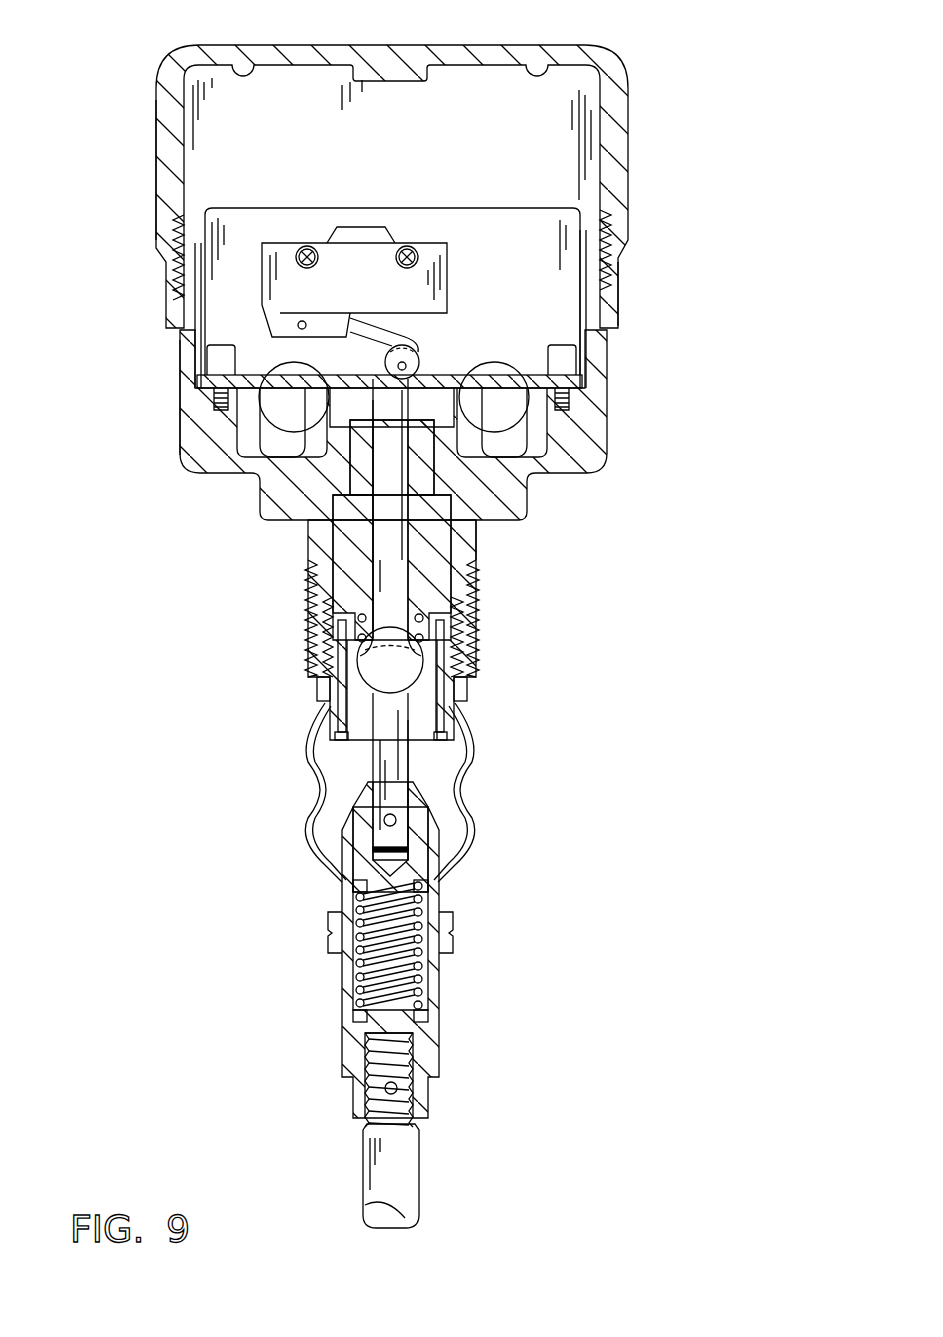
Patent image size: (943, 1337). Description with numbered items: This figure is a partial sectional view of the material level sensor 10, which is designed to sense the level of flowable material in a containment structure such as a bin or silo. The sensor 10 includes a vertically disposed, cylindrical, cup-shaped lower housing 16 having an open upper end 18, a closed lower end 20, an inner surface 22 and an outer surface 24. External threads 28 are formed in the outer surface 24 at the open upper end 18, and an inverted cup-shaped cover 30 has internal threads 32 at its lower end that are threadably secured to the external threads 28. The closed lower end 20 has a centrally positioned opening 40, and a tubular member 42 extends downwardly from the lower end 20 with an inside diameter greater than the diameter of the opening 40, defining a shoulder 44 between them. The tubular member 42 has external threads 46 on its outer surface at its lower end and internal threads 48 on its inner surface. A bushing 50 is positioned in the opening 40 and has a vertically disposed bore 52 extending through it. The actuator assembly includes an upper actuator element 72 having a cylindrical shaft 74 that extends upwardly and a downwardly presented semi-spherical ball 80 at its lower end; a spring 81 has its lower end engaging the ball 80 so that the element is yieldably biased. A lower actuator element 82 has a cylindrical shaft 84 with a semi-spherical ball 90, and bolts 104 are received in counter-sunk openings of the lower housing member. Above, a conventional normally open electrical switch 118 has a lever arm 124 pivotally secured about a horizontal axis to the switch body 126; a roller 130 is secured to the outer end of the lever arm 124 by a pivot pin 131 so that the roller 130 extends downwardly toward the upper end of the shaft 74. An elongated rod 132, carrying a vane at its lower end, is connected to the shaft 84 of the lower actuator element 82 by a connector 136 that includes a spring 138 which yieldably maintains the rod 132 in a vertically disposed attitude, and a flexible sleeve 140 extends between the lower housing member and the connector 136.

The material level sensor 10 is at (672, 187).
The lower housing 16 is at (626, 387).
The open upper end 18 is at (592, 240).
The closed lower end 20 is at (543, 440).
The inner surface 22 is at (195, 350).
The outer surface 24 is at (215, 397).
The external threads 28 is at (606, 262).
The cover 30 is at (648, 68).
The internal threads 32 is at (185, 258).
The opening 40 is at (437, 468).
The tubular member 42 is at (478, 560).
The shoulder 44 is at (478, 540).
The external threads 46 is at (312, 637).
The internal threads 48 is at (337, 593).
The bushing 50 is at (610, 327).
The bore 52 is at (300, 473).
The upper actuator element 72 is at (372, 553).
The cylindrical shaft 74 is at (373, 530).
The semi-spherical ball 80 is at (462, 686).
The spring 81 is at (440, 612).
The lower actuator element 82 is at (423, 779).
The cylindrical shaft 84 is at (388, 765).
The semi-spherical ball 90 is at (375, 687).
The bolts 104 is at (447, 710).
The electrical switch 118 is at (436, 234).
The lever arm 124 is at (425, 332).
The switch body 126 is at (372, 291).
The roller 130 is at (365, 380).
The pivot pin 131 is at (421, 368).
The elongated rod 132 is at (398, 1175).
The connector 136 is at (437, 1012).
The spring 138 is at (420, 910).
The flexible sleeve 140 is at (478, 826).